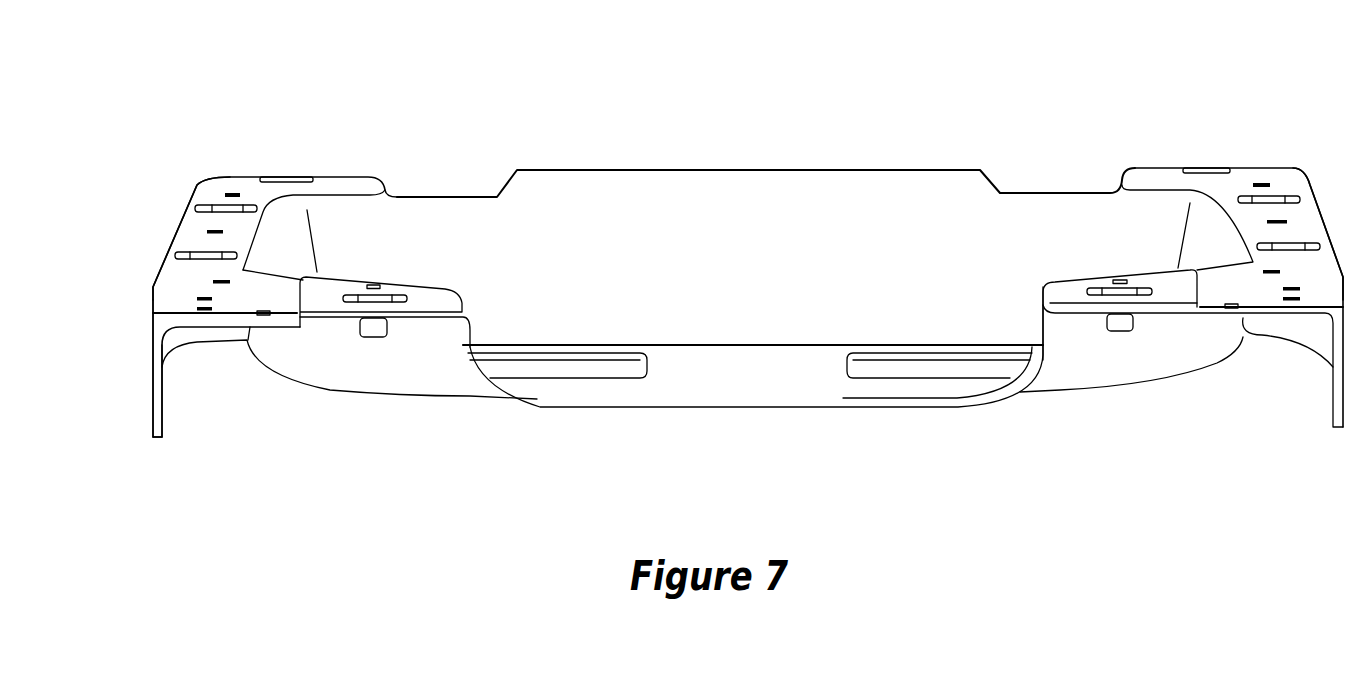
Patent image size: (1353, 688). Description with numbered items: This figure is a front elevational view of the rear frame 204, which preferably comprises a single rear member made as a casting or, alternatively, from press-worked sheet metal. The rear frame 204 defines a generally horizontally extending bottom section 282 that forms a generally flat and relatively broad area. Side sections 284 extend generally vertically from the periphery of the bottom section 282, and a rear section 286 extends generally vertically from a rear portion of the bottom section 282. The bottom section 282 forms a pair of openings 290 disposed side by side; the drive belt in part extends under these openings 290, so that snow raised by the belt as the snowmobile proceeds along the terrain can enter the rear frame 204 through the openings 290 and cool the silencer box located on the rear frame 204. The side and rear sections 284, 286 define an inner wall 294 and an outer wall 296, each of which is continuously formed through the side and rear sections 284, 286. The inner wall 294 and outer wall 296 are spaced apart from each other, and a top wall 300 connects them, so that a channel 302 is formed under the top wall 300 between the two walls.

The rear frame 204 is at (693, 276).
The bottom section 282 is at (753, 373).
The side sections 284 is at (195, 233).
The rear section 286 is at (698, 168).
The openings 290 is at (602, 367).
The inner wall 294 is at (297, 245).
The outer wall 296 is at (152, 373).
The top wall 300 is at (244, 227).
The channel 302 is at (220, 360).